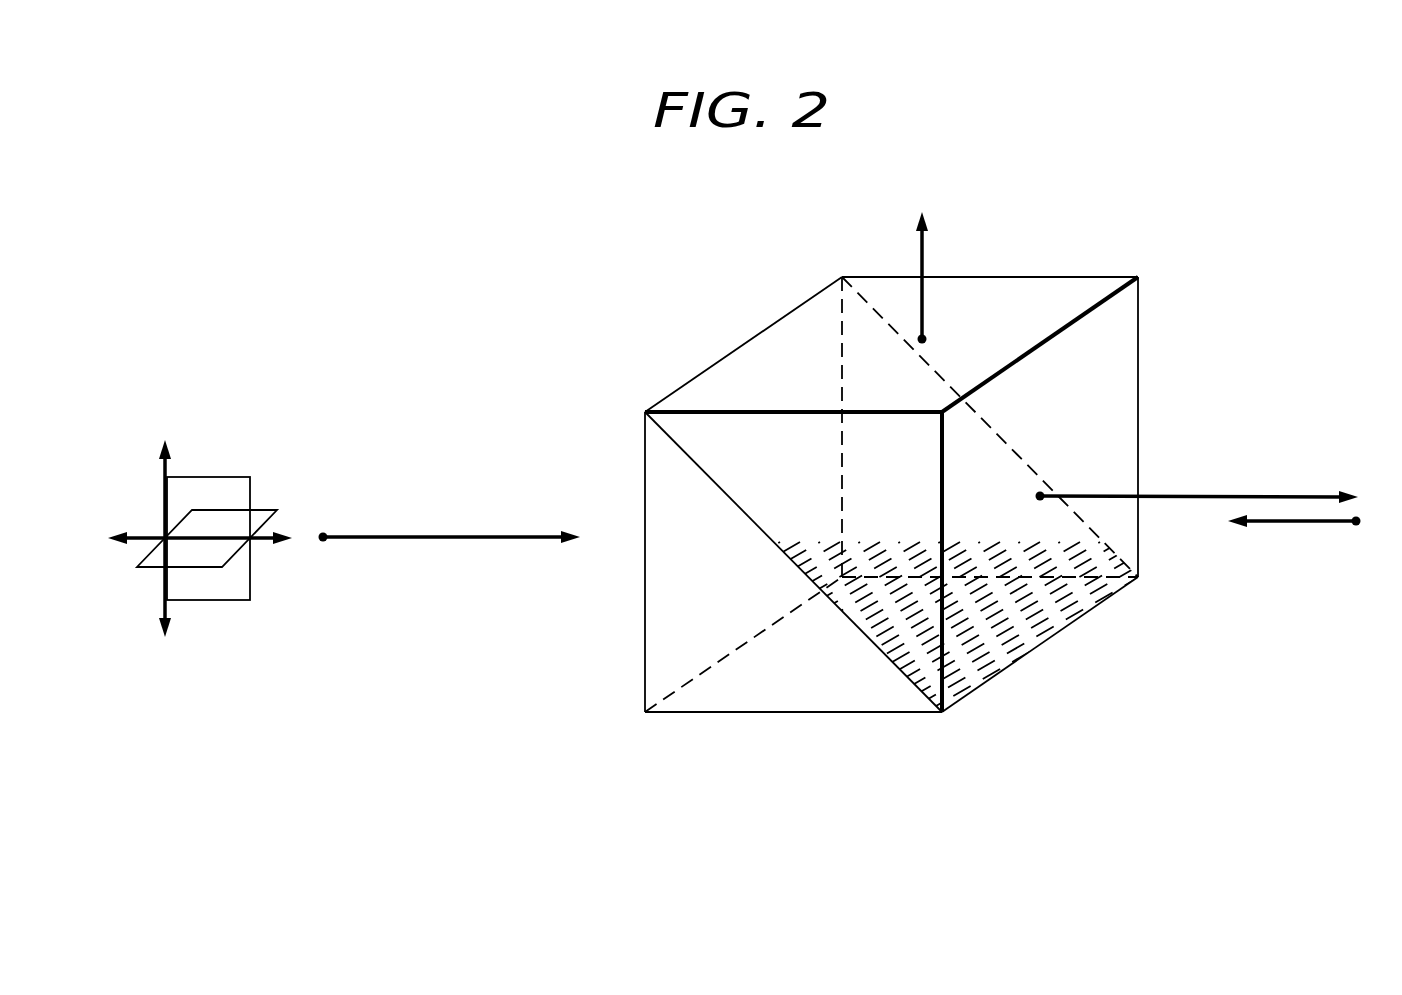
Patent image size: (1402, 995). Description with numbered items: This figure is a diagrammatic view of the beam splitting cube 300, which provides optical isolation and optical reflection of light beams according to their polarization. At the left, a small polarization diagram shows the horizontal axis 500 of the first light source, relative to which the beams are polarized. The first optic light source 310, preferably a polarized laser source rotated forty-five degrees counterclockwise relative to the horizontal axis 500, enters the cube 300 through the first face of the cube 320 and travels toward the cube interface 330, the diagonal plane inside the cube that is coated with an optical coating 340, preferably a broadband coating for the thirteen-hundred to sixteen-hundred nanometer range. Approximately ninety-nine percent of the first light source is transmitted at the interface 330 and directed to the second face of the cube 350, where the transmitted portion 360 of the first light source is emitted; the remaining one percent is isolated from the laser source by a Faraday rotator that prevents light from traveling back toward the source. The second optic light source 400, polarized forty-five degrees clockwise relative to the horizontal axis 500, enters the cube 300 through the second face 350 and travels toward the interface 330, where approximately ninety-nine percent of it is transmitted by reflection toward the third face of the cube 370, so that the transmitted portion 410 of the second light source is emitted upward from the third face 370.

The beam splitting cube 300 is at (650, 538).
The first optic light source 310 is at (323, 541).
The first face of the cube 320 is at (757, 388).
The cube interface 330 is at (926, 660).
The optical coating 340 is at (650, 588).
The second face of the cube 350 is at (1110, 357).
The transmitted portion of the first light source 360 is at (1233, 497).
The third face of the cube 370 is at (1053, 300).
The second optic light source 400 is at (1356, 523).
The transmitted portion of the second light source 410 is at (925, 250).
The horizontal axis 500 is at (258, 512).